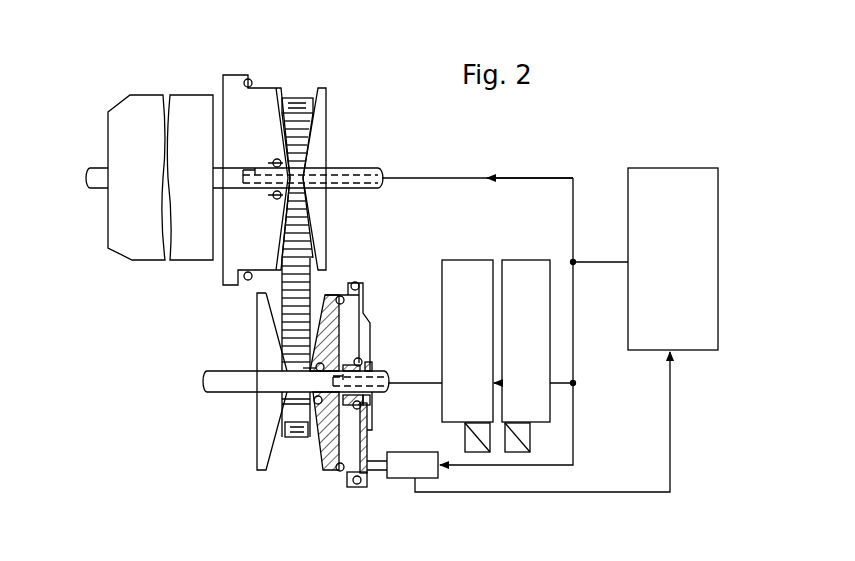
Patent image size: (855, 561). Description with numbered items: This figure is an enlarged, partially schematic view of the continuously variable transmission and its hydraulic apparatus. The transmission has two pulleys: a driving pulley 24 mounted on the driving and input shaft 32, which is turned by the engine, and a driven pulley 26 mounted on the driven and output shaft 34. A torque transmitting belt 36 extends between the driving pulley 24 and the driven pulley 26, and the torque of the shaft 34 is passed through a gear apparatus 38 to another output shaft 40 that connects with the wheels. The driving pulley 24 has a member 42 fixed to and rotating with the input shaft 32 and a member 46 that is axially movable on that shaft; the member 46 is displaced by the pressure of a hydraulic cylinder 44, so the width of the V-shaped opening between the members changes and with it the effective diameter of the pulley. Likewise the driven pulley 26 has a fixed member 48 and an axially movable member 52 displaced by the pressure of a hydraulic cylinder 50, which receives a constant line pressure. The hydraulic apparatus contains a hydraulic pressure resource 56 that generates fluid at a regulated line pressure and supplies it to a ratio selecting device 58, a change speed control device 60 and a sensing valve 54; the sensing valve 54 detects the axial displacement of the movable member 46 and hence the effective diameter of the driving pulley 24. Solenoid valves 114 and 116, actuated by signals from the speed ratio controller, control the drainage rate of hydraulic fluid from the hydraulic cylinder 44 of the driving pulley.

The driving pulley 24 is at (246, 483).
The driven pulley 26 is at (322, 76).
The input shaft 32 is at (215, 392).
The output shaft 34 is at (365, 170).
The torque transmitting belt 36 is at (300, 290).
The gear apparatus 38 is at (152, 107).
The output shaft 40 is at (96, 167).
The fixed member of driving pulley 42 is at (260, 423).
The hydraulic cylinder 44 is at (342, 433).
The movable member of driving pulley 46 is at (313, 463).
The fixed member of driven pulley 48 is at (322, 147).
The hydraulic cylinder 50 is at (235, 102).
The movable member of driven pulley 52 is at (282, 98).
The sensing valve 54 is at (405, 465).
The hydraulic pressure resource 56 is at (652, 173).
The ratio selecting device 58 is at (530, 260).
The change speed control device 60 is at (467, 260).
The solenoid valve 114 is at (530, 441).
The solenoid valve 116 is at (465, 430).